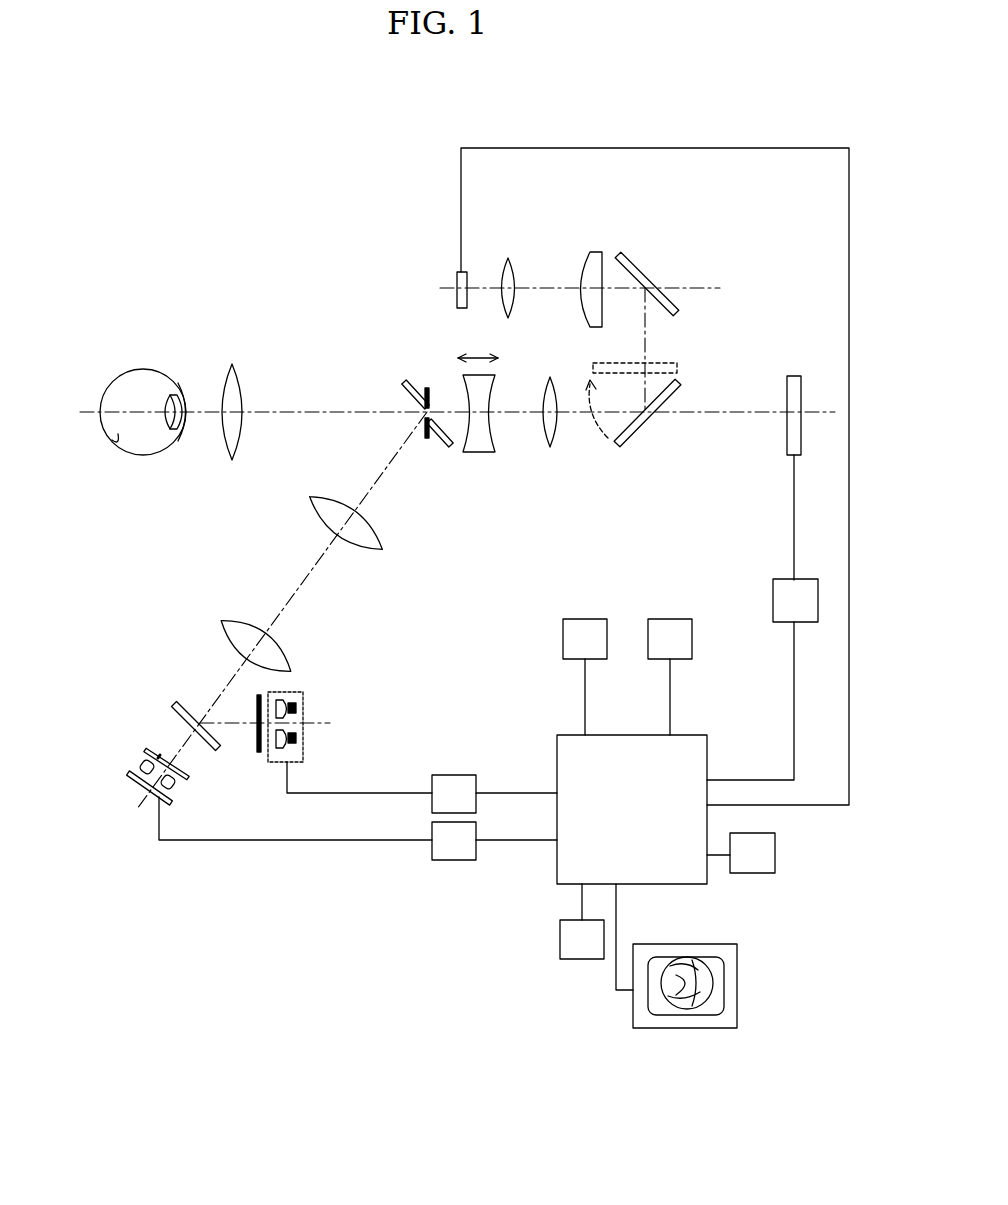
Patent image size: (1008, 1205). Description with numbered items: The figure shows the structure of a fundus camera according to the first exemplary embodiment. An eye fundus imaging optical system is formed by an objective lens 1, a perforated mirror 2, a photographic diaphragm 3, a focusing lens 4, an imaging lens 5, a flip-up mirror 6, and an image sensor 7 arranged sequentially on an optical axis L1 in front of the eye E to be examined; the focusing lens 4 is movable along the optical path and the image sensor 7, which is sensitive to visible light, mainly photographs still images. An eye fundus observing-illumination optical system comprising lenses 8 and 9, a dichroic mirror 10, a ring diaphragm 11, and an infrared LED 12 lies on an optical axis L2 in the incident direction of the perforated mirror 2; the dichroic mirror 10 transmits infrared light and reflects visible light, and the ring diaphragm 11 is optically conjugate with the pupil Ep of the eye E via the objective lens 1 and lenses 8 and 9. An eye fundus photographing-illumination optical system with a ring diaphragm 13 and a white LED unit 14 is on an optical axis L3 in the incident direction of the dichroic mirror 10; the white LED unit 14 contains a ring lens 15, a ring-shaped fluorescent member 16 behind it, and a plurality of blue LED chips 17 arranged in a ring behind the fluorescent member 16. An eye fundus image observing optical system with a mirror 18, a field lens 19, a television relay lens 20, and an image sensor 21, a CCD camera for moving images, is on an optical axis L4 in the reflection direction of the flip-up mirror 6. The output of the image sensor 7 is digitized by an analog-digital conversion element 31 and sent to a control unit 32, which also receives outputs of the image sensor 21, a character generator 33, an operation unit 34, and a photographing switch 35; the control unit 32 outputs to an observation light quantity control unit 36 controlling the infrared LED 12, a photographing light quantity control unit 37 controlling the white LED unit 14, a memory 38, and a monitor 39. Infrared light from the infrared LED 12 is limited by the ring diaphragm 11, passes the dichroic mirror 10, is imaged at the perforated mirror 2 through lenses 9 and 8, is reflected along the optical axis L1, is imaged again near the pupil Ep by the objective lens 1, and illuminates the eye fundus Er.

The eye to be examined E is at (124, 382).
The pupil Ep is at (178, 396).
The eye fundus Er is at (117, 436).
The objective lens 1 is at (234, 368).
The optical axis L1 is at (322, 410).
The perforated mirror 2 is at (412, 382).
The photographic diaphragm 3 is at (432, 428).
The focusing lens 4 is at (486, 380).
The imaging lens 5 is at (550, 440).
The flip-up mirror 6 is at (622, 448).
The image sensor 7 is at (795, 380).
The lens 8 is at (322, 502).
The optical axis L2 is at (378, 484).
The lens 9 is at (232, 626).
The dichroic mirror 10 is at (185, 710).
The ring diaphragm 11 is at (152, 754).
The infrared LED 12 is at (134, 782).
The ring diaphragm 13 is at (258, 752).
The white LED unit 14 is at (302, 694).
The ring lens 15 is at (278, 762).
The fluorescent member 16 is at (292, 760).
The blue LED chips 17 is at (298, 740).
The optical axis L3 is at (328, 722).
The mirror 18 is at (666, 302).
The field lens 19 is at (595, 262).
The television relay lens 20 is at (508, 268).
The image sensor 21 is at (458, 280).
The optical axis L4 is at (645, 343).
The analog-digital conversion element 31 is at (796, 590).
The control unit 32 is at (562, 880).
The character generator 33 is at (578, 956).
The operation unit 34 is at (586, 625).
The photographing switch 35 is at (671, 625).
The observation light quantity control unit 36 is at (454, 858).
The photographing light quantity control unit 37 is at (457, 782).
The memory 38 is at (766, 850).
The monitor 39 is at (738, 984).